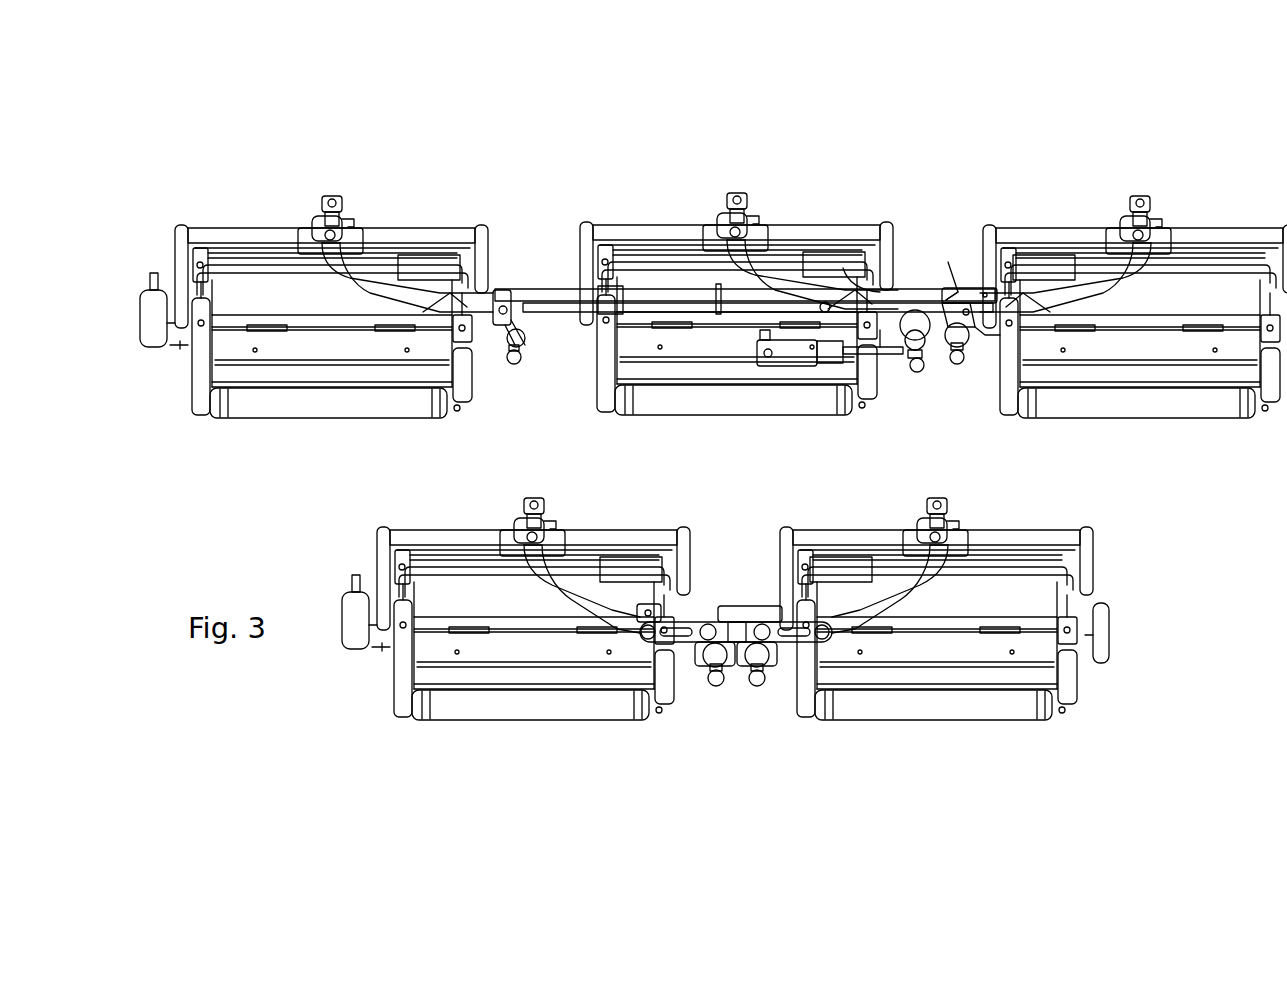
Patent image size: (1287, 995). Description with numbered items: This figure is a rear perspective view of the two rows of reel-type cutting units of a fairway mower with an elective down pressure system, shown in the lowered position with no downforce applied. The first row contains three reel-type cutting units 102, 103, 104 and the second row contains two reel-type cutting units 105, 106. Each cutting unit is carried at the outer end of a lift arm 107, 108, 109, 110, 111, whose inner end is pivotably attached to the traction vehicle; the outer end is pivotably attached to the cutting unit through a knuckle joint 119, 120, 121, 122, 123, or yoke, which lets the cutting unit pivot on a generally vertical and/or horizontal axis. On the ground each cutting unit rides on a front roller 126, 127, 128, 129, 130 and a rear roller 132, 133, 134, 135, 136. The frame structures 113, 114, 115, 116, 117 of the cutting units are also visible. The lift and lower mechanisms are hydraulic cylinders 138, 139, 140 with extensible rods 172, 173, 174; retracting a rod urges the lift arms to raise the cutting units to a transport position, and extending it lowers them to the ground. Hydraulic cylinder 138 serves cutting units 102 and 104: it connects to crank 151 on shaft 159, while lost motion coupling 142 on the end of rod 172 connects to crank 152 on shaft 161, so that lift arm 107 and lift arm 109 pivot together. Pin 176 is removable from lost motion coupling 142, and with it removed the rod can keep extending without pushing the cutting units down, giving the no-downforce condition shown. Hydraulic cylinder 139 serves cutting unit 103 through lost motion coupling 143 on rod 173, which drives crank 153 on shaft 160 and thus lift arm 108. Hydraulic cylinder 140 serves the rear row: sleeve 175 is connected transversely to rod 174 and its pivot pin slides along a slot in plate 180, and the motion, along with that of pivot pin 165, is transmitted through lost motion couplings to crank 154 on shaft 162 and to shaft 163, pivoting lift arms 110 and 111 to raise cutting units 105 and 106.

The reel-type cutting unit 102 is at (378, 182).
The reel-type cutting unit 103 is at (830, 190).
The reel-type cutting unit 104 is at (1174, 180).
The reel-type cutting unit 105 is at (394, 746).
The reel-type cutting unit 106 is at (1094, 740).
The lift arm 107 is at (382, 262).
The lift arm 108 is at (780, 245).
The lift arm 109 is at (1082, 255).
The lift arm 110 is at (566, 605).
The lift arm 111 is at (905, 600).
The cutting unit frame 113 is at (232, 235).
The cutting unit frame 114 is at (625, 225).
The cutting unit frame 115 is at (1222, 240).
The cutting unit frame 116 is at (445, 535).
The cutting unit frame 117 is at (1035, 540).
The knuckle joint 119 is at (330, 215).
The knuckle joint 120 is at (715, 197).
The knuckle joint 121 is at (1143, 195).
The knuckle joint 122 is at (520, 520).
The knuckle joint 123 is at (916, 525).
The front roller 126 is at (268, 380).
The front roller 127 is at (645, 380).
The front roller 128 is at (1160, 400).
The front roller 129 is at (462, 690).
The front roller 130 is at (888, 690).
The rear roller 132 is at (335, 418).
The rear roller 133 is at (676, 410).
The rear roller 134 is at (1120, 400).
The rear roller 135 is at (568, 725).
The rear roller 136 is at (1040, 720).
The hydraulic cylinder 138 is at (535, 290).
The hydraulic cylinder 139 is at (792, 365).
The hydraulic cylinder 140 is at (745, 620).
The lost motion coupling 142 is at (925, 290).
The lost motion coupling 143 is at (878, 385).
The crank 151 is at (540, 345).
The crank 152 is at (985, 293).
The crank 153 is at (955, 365).
The crank 154 is at (707, 668).
The shaft 159 is at (516, 368).
The shaft 160 is at (913, 380).
The shaft 161 is at (978, 372).
The shaft 162 is at (713, 690).
The shaft 163 is at (760, 690).
The pivot pin 165 is at (770, 665).
The extensible rod 172 is at (843, 275).
The extensible rod 173 is at (828, 400).
The extensible rod 174 is at (702, 613).
The sleeve 175 is at (633, 600).
The pin 176 is at (946, 265).
The plate 180 is at (734, 642).